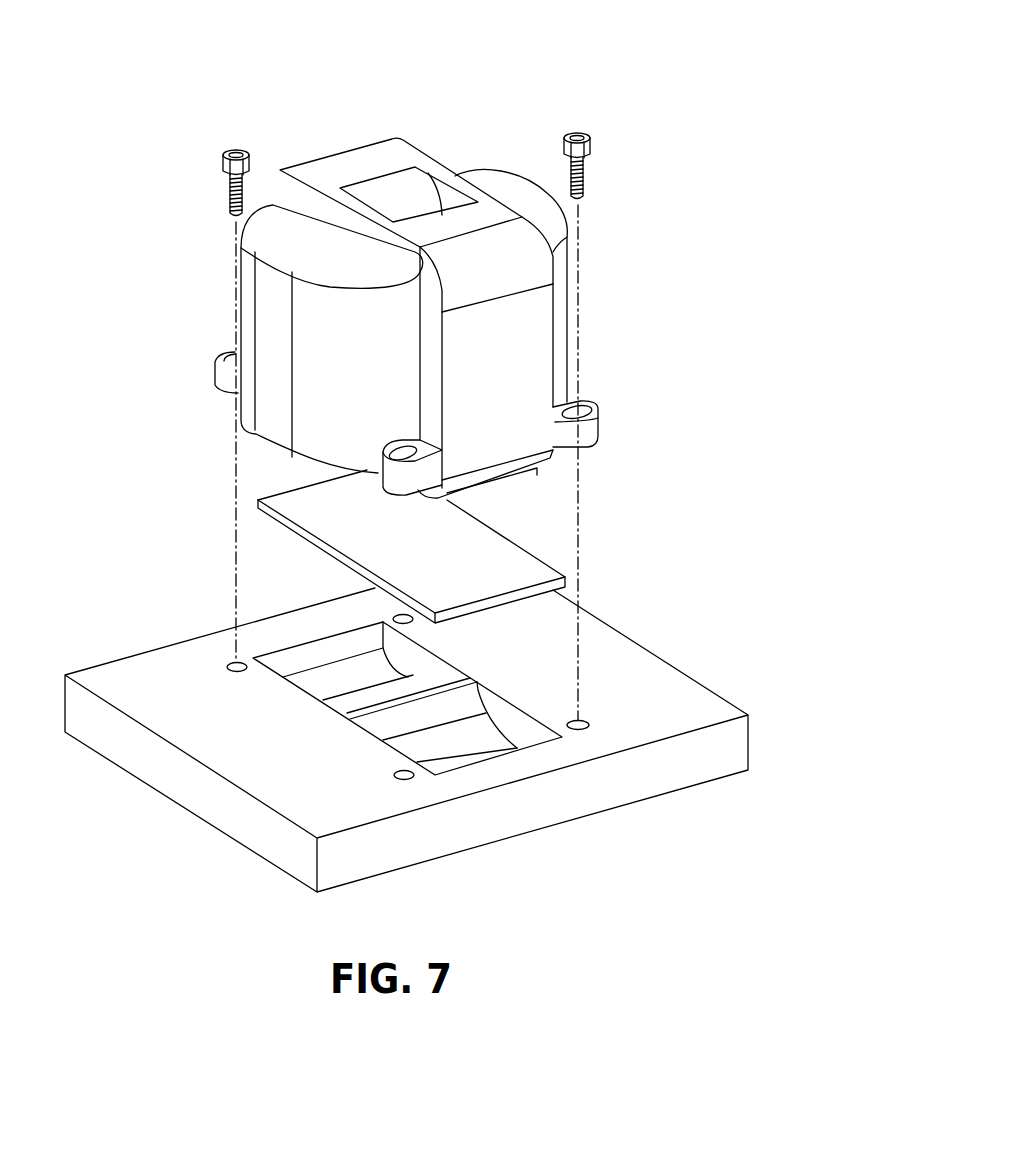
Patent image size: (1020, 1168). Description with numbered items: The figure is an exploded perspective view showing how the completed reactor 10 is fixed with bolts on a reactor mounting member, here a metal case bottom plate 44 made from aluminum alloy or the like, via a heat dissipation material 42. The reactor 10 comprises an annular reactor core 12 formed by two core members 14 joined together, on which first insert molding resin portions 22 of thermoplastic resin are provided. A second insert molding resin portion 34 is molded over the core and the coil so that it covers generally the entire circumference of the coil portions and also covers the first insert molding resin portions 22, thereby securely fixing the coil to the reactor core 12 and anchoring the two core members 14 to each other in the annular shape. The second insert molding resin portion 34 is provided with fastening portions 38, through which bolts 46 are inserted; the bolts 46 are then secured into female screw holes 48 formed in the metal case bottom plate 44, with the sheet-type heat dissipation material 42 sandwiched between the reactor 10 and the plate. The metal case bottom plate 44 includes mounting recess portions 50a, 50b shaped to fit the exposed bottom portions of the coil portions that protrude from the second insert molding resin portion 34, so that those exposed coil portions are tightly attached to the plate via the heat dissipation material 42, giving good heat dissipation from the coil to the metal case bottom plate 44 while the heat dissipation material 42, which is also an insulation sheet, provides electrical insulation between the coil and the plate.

The reactor 10 is at (538, 90).
The reactor core 12 is at (357, 274).
The core member 14 is at (478, 168).
The first insert molding resin portion 22 is at (271, 236).
The second insert molding resin portion 34 is at (347, 150).
The fastening portion 38 is at (215, 372).
The heat dissipation material 42 is at (513, 538).
The metal case bottom plate 44 is at (683, 667).
The bolt 46 is at (222, 160).
The female screw hole 48 is at (400, 618).
The mounting recess portion 50a is at (322, 675).
The mounting recess portion 50b is at (470, 755).